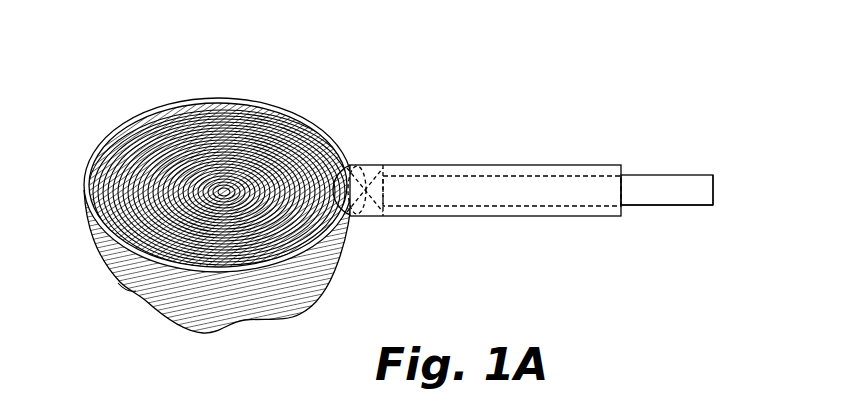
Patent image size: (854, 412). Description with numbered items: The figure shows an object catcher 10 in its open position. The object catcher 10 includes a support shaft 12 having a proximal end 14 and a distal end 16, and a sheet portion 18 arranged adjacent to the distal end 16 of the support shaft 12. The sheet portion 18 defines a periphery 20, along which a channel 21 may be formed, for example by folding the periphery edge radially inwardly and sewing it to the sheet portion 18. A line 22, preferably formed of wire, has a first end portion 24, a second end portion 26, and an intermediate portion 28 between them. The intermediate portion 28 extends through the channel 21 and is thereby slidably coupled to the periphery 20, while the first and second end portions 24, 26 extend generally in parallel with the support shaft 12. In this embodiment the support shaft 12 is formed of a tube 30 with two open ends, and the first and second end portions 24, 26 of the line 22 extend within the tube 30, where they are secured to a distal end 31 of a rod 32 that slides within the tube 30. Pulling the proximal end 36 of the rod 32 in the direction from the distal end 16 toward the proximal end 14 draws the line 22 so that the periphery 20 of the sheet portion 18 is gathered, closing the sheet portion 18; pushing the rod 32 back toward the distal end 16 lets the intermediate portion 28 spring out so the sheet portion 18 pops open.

The object catcher 10 is at (411, 64).
The support shaft 12 is at (487, 163).
The proximal end 14 is at (626, 174).
The distal end 16 is at (345, 165).
The sheet portion 18 is at (150, 296).
The periphery 20 is at (95, 164).
The channel 21 is at (322, 270).
The line 22 is at (262, 101).
The first end portion 24 is at (381, 167).
The second end portion 26 is at (376, 216).
The intermediate portion 28 is at (93, 245).
The tube 30 is at (564, 165).
The distal end 31 is at (398, 208).
The rod 32 is at (652, 207).
The proximal end 36 is at (714, 195).